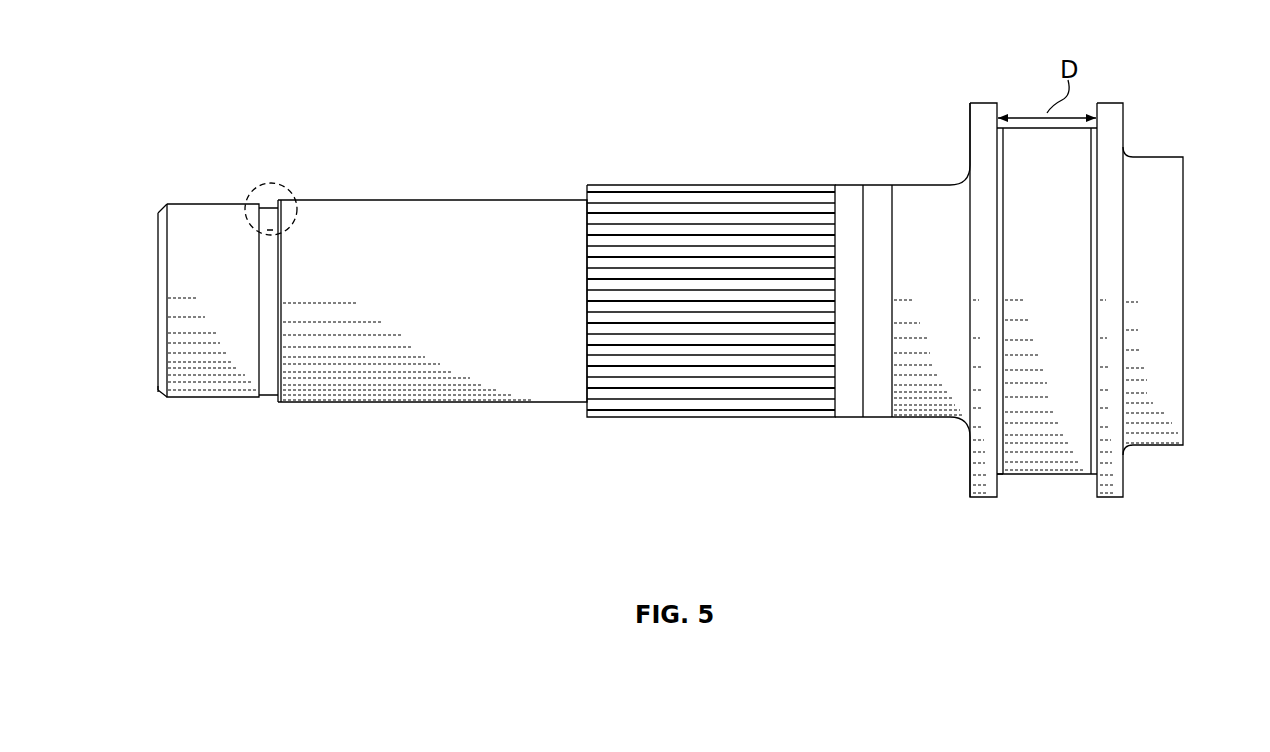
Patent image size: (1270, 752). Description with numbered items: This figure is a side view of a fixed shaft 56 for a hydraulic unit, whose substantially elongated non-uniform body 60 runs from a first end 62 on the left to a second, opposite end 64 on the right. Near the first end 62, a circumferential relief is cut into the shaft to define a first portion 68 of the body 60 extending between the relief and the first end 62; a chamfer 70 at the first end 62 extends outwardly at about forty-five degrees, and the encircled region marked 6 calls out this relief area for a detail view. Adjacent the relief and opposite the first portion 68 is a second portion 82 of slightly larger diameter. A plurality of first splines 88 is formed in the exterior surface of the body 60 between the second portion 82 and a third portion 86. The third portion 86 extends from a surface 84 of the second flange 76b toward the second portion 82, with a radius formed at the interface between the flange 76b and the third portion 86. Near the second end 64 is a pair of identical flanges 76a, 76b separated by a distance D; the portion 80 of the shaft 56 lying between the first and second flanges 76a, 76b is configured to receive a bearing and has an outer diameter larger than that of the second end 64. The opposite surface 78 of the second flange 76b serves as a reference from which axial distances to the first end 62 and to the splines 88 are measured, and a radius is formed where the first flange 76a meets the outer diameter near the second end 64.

The fixed shaft 56 is at (218, 68).
The first end 62 is at (158, 293).
The chamfer 70 is at (162, 367).
The first portion 68 is at (215, 202).
The body 60 is at (270, 398).
The detail circle (FIG. 6) 6 is at (268, 180).
The second portion 82 is at (362, 198).
The first splines 88 is at (770, 215).
The third portion 86 is at (938, 183).
The surface 84 is at (968, 478).
The second flange 76b is at (985, 492).
The portion 80 is at (1030, 474).
The opposite surface 78 is at (998, 490).
The first flange 76a is at (1110, 490).
The second end 64 is at (1183, 342).